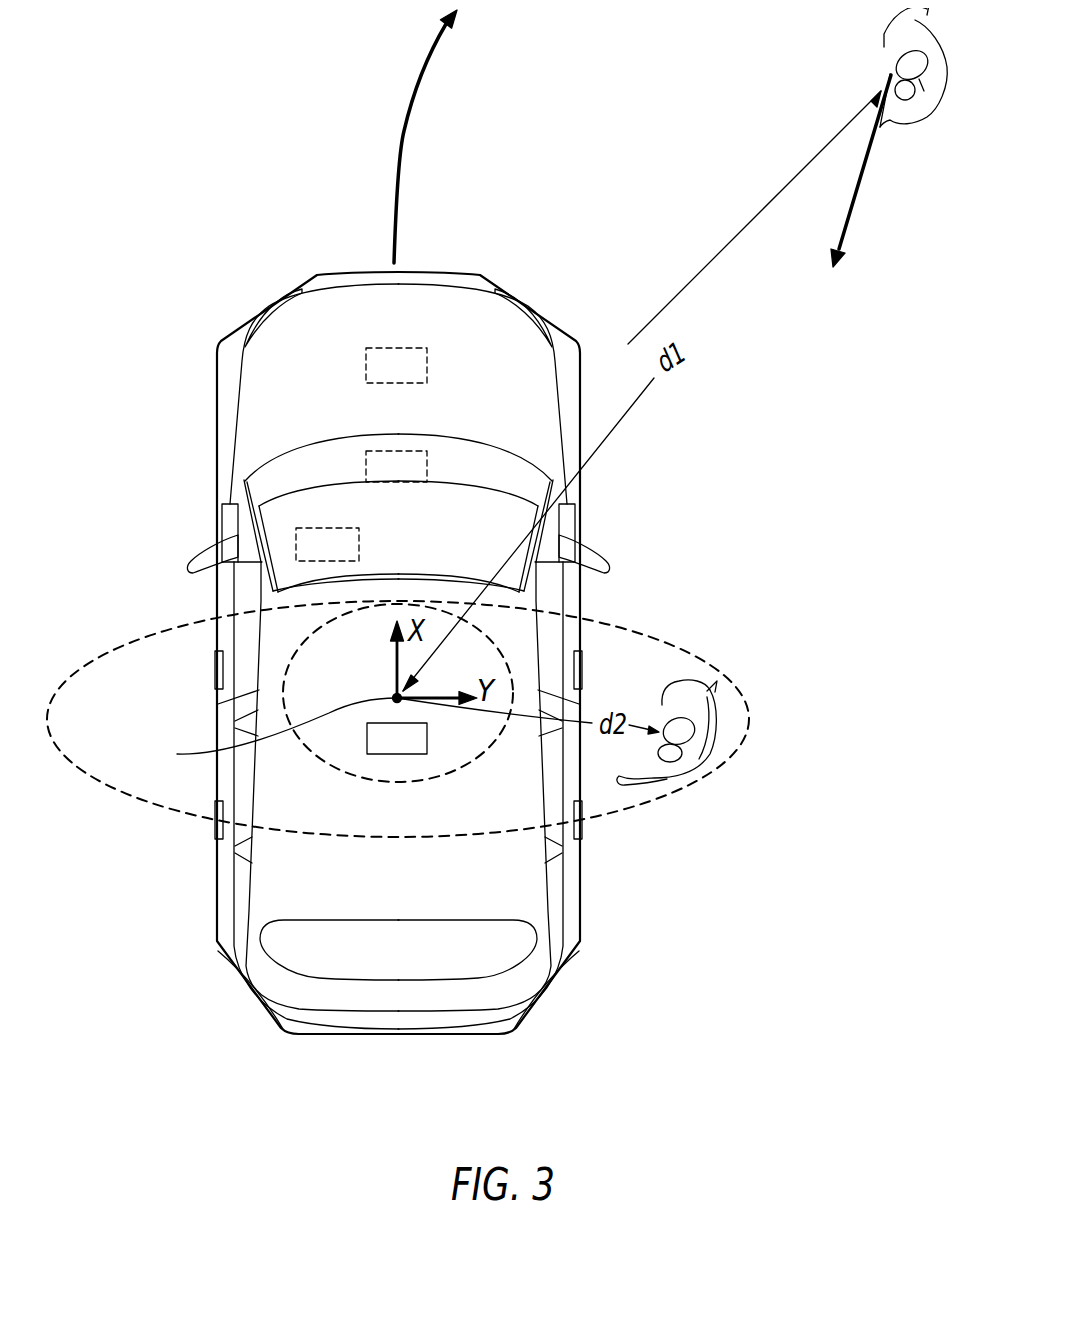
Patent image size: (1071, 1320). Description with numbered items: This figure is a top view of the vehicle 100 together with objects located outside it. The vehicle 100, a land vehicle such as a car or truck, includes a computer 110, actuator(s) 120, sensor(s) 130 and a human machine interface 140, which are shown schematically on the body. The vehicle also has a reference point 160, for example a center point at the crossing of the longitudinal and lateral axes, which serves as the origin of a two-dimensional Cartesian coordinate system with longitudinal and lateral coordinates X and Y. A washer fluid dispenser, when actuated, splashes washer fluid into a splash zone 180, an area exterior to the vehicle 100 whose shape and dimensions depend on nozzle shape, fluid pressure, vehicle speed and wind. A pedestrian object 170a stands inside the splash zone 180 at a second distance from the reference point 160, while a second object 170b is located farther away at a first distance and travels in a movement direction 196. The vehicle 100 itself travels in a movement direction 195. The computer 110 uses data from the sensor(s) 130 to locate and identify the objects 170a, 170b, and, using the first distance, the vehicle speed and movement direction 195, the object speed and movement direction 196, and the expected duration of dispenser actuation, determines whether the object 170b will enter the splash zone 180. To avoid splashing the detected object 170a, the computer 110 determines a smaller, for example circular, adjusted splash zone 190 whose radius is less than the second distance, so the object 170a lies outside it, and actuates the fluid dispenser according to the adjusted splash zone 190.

The vehicle 100 is at (409, 873).
The computer 110 is at (396, 468).
The actuator 120 is at (396, 365).
The sensor 130 is at (397, 740).
The human machine interface 140 is at (327, 545).
The reference point 160 is at (268, 734).
The object 170a is at (717, 728).
The object 170b is at (893, 67).
The splash zone 180 is at (695, 657).
The adjusted splash zone 190 is at (489, 658).
The movement direction 195 is at (402, 132).
The movement direction 196 is at (863, 187).